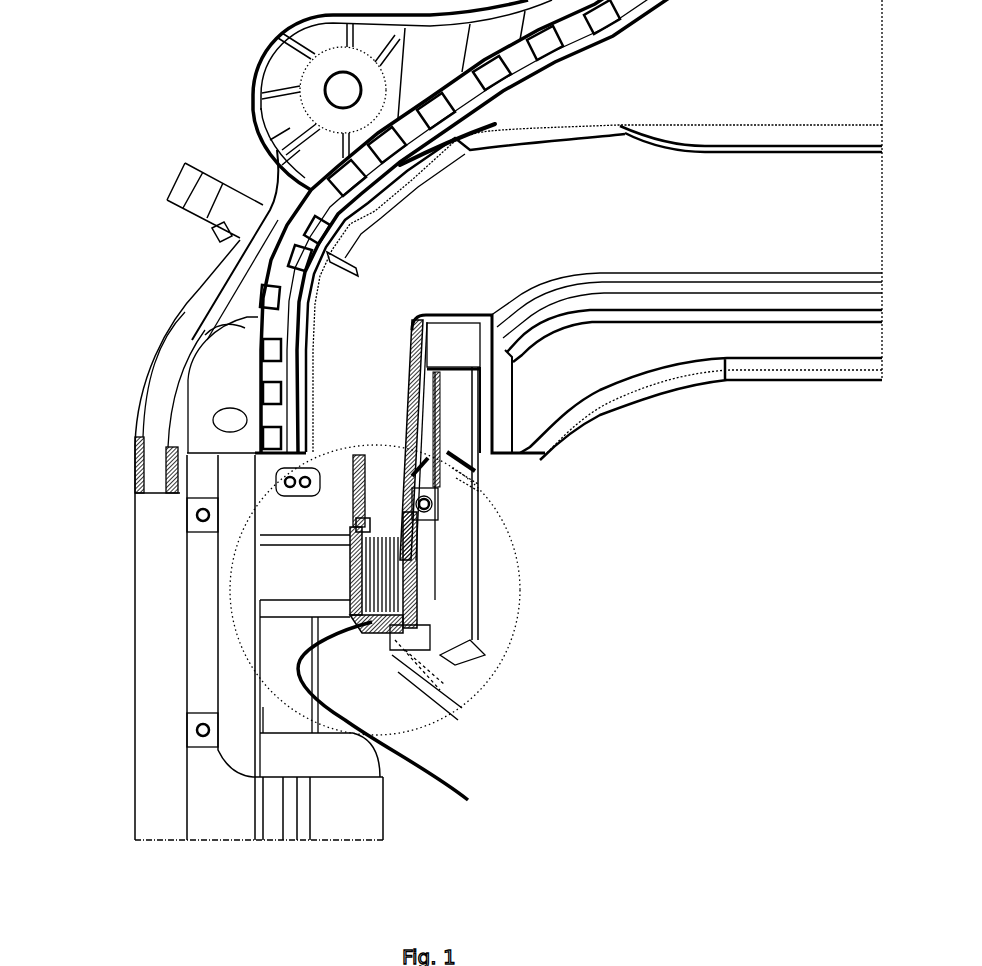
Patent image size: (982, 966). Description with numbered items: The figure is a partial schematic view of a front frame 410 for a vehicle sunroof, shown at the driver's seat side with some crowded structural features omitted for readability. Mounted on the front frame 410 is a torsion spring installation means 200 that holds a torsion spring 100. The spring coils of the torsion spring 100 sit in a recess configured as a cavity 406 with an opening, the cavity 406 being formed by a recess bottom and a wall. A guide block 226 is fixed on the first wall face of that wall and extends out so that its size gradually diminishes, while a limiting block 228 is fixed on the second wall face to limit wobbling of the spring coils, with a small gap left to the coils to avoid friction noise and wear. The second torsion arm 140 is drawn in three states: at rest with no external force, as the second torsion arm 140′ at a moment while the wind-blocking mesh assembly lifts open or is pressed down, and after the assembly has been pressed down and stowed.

The front frame 410 is at (620, 226).
The torsion spring 100 is at (427, 578).
The second torsion arm 140′ is at (447, 452).
The guide block 226 is at (345, 603).
The limiting block 228 is at (418, 680).
The second torsion arm 140 is at (435, 673).
The torsion spring installation means 200 is at (346, 620).
The cavity 406 is at (413, 721).